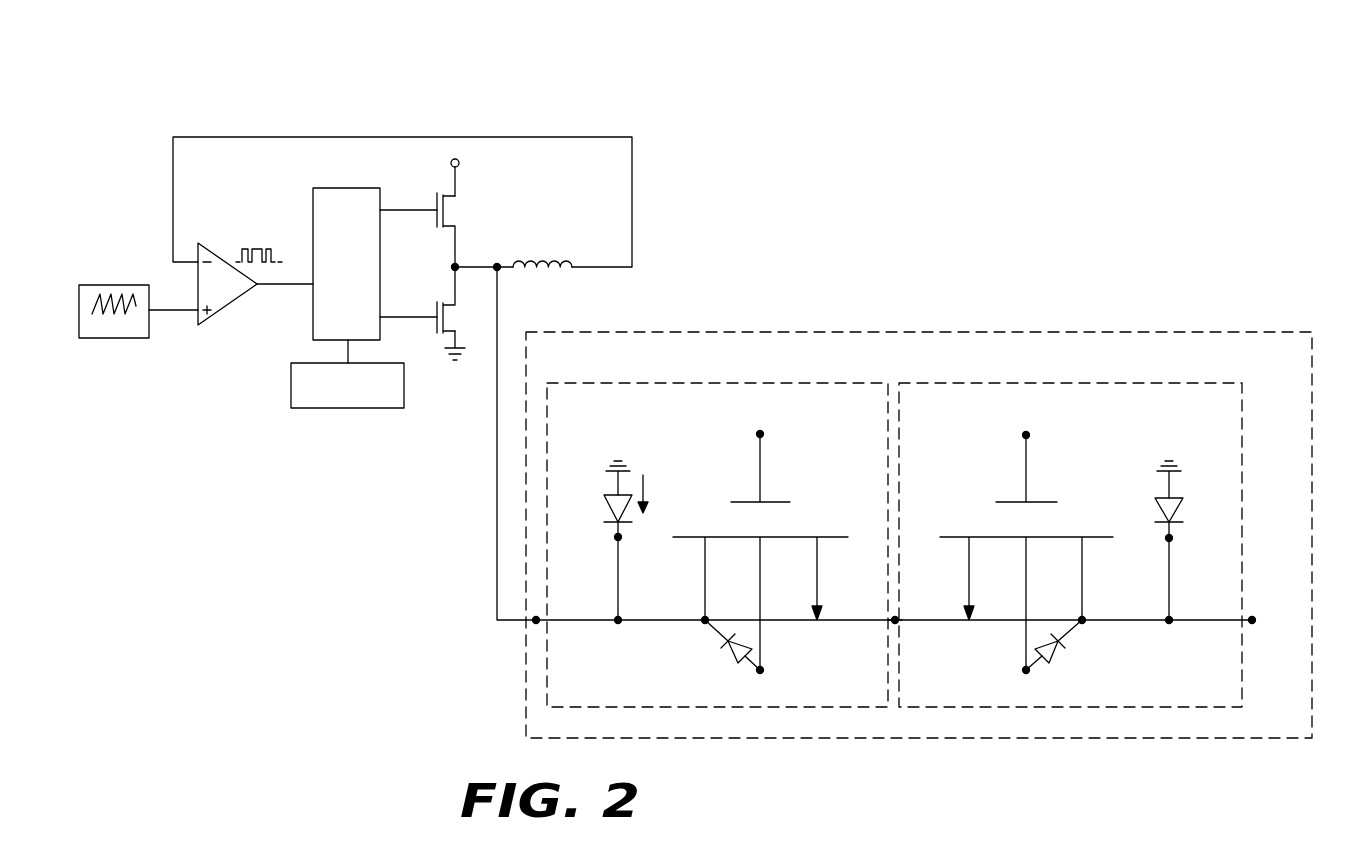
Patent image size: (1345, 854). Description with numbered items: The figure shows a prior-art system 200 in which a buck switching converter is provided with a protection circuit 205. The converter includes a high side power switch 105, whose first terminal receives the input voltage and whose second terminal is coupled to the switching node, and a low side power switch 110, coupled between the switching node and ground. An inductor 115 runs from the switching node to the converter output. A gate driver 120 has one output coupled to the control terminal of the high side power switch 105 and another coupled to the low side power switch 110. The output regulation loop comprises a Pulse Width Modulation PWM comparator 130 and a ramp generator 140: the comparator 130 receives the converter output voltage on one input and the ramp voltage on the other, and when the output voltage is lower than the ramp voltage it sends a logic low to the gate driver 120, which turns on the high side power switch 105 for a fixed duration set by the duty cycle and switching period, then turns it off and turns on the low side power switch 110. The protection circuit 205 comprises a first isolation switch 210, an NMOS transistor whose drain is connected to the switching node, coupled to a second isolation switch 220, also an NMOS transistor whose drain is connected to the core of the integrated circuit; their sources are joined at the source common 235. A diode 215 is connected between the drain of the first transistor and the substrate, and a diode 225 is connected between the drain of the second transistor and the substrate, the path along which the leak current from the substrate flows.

The system 200 is at (195, 102).
The Pulse Width Modulation PWM comparator 130 is at (222, 253).
The ramp generator 140 is at (111, 285).
The gate driver 120 is at (364, 298).
The high side power switch 105 is at (446, 213).
The low side power switch 110 is at (446, 319).
The inductor 115 is at (541, 256).
The protection circuit 205 is at (752, 331).
The first isolation switch 210 is at (650, 383).
The second isolation switch 220 is at (1135, 383).
The diode 215 is at (600, 510).
The diode 225 is at (1180, 512).
The source common 235 is at (887, 629).